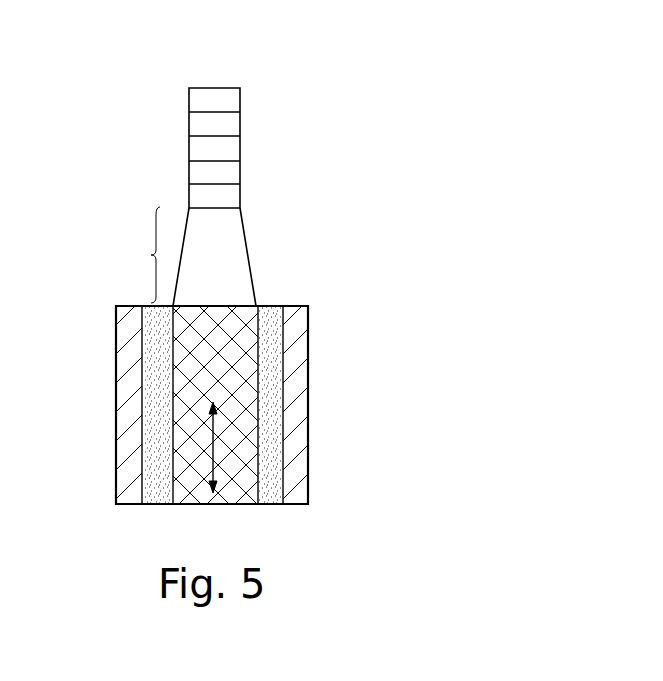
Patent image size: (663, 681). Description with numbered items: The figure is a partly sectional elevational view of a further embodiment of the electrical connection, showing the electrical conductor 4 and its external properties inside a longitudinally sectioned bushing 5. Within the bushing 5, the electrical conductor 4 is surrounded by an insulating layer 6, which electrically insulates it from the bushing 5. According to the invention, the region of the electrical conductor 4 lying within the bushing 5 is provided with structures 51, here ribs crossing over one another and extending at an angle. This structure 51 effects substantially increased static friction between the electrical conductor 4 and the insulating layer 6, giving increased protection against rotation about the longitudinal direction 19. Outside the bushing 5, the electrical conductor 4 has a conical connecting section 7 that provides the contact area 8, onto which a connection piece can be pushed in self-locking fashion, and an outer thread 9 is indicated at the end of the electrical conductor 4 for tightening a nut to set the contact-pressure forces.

The electrical conductor 4 is at (212, 88).
The outer thread 9 is at (233, 147).
The contact area 8 is at (238, 240).
The connecting section 7 is at (151, 255).
The insulating layer 6 is at (272, 312).
The bushing 5 is at (298, 332).
The structures 51 is at (232, 398).
The longitudinal direction 19 is at (213, 448).